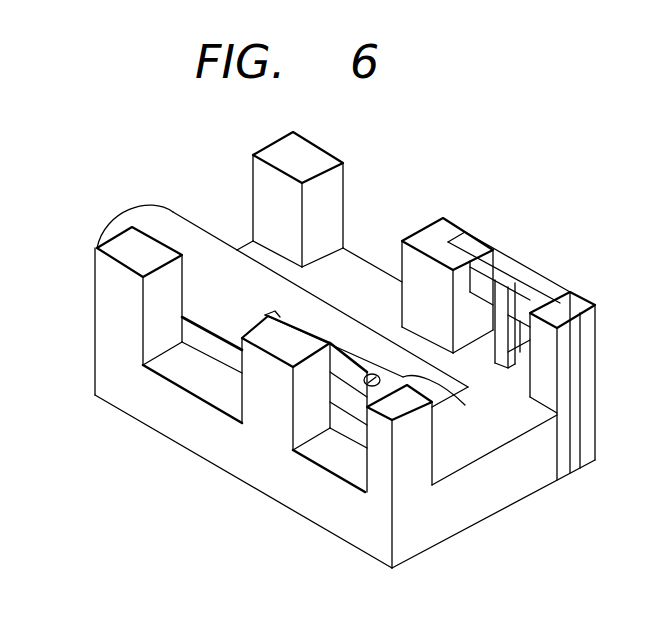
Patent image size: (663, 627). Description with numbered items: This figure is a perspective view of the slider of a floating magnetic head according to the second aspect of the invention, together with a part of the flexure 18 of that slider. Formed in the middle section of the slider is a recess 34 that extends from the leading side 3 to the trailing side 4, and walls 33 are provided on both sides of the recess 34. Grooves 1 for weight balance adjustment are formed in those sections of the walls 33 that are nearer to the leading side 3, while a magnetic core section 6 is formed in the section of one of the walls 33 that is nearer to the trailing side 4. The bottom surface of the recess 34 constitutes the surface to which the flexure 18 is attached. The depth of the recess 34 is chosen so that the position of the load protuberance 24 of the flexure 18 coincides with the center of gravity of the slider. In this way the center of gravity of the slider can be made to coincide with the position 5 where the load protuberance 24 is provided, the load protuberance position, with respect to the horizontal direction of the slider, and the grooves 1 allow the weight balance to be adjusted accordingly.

The grooves 1 is at (358, 272).
The leading side 3 is at (93, 325).
The trailing side 4 is at (422, 533).
The load protuberance position 5 is at (447, 397).
The magnetic core section 6 is at (508, 275).
The flexure 18 is at (158, 225).
The load protuberance 24 is at (368, 387).
The walls 33 is at (137, 250).
The recess 34 is at (378, 303).